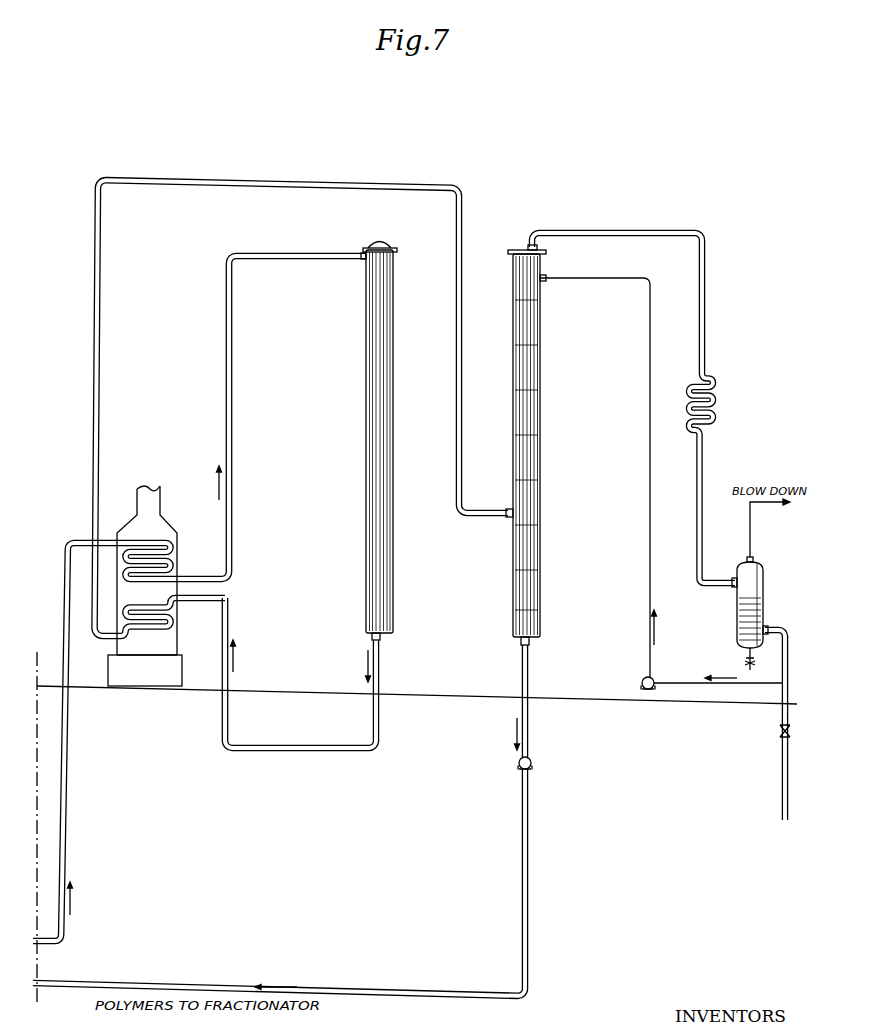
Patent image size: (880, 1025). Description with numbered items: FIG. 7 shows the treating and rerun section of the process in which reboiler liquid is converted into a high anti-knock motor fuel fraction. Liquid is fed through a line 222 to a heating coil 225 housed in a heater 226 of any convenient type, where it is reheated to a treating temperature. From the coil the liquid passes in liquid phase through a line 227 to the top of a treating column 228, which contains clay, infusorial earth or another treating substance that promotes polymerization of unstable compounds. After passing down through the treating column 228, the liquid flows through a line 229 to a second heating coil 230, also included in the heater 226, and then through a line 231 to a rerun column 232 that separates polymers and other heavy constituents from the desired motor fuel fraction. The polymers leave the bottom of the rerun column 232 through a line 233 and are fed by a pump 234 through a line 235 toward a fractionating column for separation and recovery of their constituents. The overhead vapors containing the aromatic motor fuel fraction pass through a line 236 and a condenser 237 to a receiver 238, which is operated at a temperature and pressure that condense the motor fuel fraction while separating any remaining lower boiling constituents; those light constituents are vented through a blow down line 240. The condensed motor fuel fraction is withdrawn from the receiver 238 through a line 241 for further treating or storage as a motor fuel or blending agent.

The line 222 is at (69, 845).
The heating coil 225 is at (173, 566).
The heater 226 is at (166, 536).
The line 227 is at (233, 354).
The treating column 228 is at (393, 364).
The line 229 is at (229, 613).
The heating coil 230 is at (173, 634).
The line 231 is at (461, 398).
The rerun column 232 is at (540, 463).
The line 233 is at (529, 729).
The pump 234 is at (532, 764).
The line 235 is at (529, 849).
The line 236 is at (560, 223).
The condenser 237 is at (719, 409).
The receiver 238 is at (739, 589).
The blow down line 240 is at (753, 541).
The line 241 is at (792, 637).